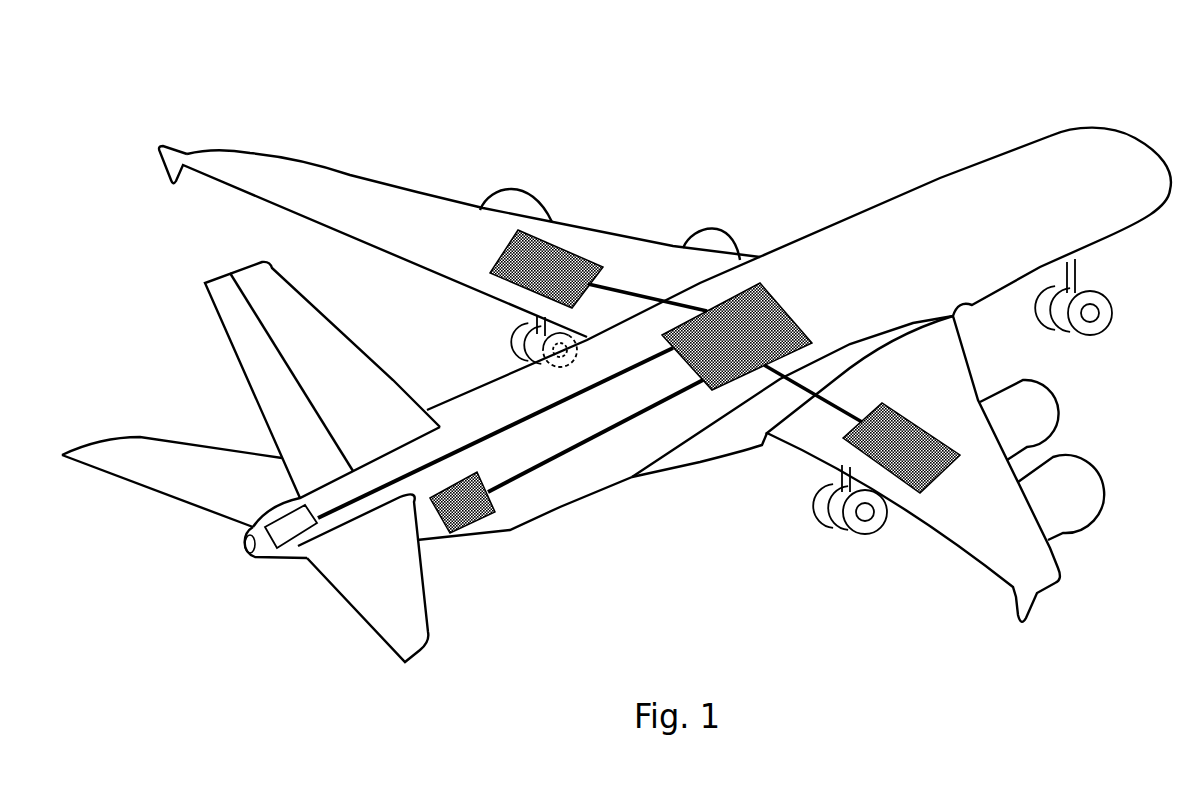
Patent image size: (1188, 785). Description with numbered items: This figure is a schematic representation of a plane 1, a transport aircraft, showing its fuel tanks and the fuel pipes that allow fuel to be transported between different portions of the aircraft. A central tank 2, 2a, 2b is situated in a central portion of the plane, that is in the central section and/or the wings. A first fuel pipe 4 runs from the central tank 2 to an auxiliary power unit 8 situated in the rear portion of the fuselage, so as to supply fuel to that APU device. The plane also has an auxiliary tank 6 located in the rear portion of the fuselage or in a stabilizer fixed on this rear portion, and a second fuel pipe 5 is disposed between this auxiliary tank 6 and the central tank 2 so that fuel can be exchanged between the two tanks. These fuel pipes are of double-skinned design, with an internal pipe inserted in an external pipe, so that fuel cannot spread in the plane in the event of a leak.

The plane 1 is at (798, 102).
The central tank 2 is at (783, 307).
The central tank 2a is at (905, 490).
The central tank 2b is at (553, 240).
The first fuel pipe 4 is at (513, 425).
The second fuel pipe 5 is at (542, 463).
The auxiliary tank 6 is at (480, 523).
The auxiliary power unit 8 is at (285, 550).